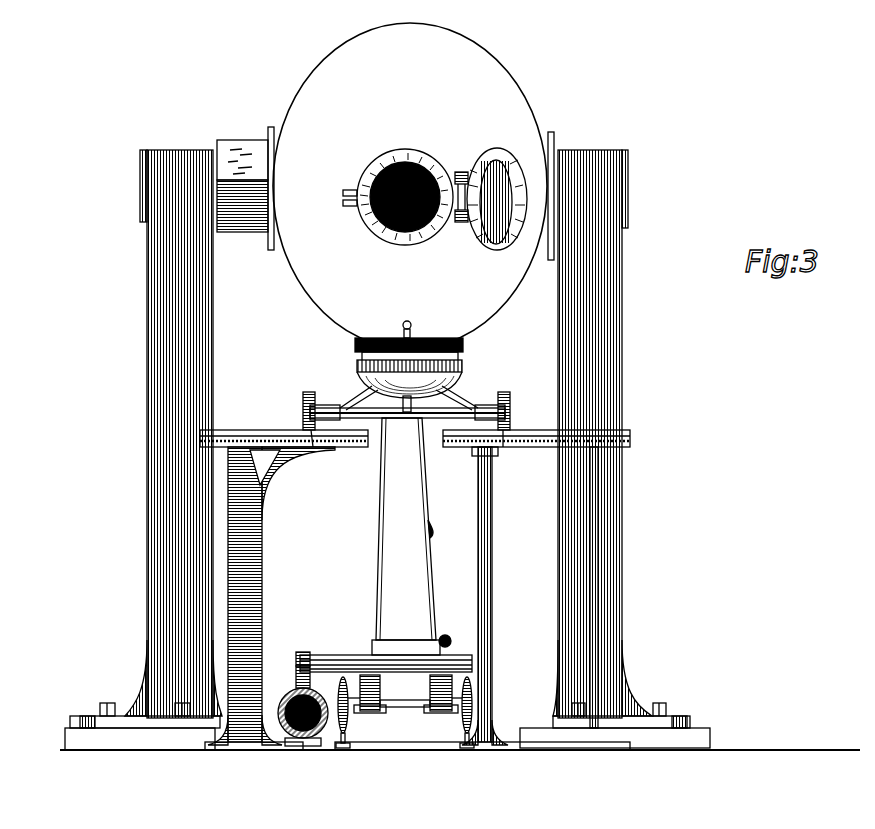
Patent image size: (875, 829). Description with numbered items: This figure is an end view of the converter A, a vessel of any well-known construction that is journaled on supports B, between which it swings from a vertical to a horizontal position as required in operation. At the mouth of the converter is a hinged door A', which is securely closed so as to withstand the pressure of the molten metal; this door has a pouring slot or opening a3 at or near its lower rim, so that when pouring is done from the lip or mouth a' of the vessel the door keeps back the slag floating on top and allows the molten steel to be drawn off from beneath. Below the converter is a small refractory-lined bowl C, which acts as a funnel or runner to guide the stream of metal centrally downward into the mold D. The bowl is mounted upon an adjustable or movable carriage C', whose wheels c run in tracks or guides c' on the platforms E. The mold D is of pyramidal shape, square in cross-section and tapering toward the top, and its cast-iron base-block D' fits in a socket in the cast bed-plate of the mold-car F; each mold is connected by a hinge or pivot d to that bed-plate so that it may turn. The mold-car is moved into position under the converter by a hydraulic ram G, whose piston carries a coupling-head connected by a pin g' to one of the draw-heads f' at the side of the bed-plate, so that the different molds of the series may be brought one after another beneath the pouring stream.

The converter A is at (410, 186).
The hinged door A' is at (491, 183).
The lip or mouth a' is at (398, 215).
The pouring slot a3 is at (496, 245).
The supports B is at (150, 351).
The bowl C is at (409, 343).
The carriage C' is at (407, 390).
The wheels c is at (405, 401).
The tracks or guides c' is at (408, 461).
The platforms E is at (236, 432).
The mold D is at (406, 529).
The base-block D' is at (406, 634).
The hinge or pivot d is at (448, 638).
The mold-car F is at (330, 660).
The pin g' is at (299, 641).
The draw-heads f' is at (290, 670).
The hydraulic ram G is at (298, 737).